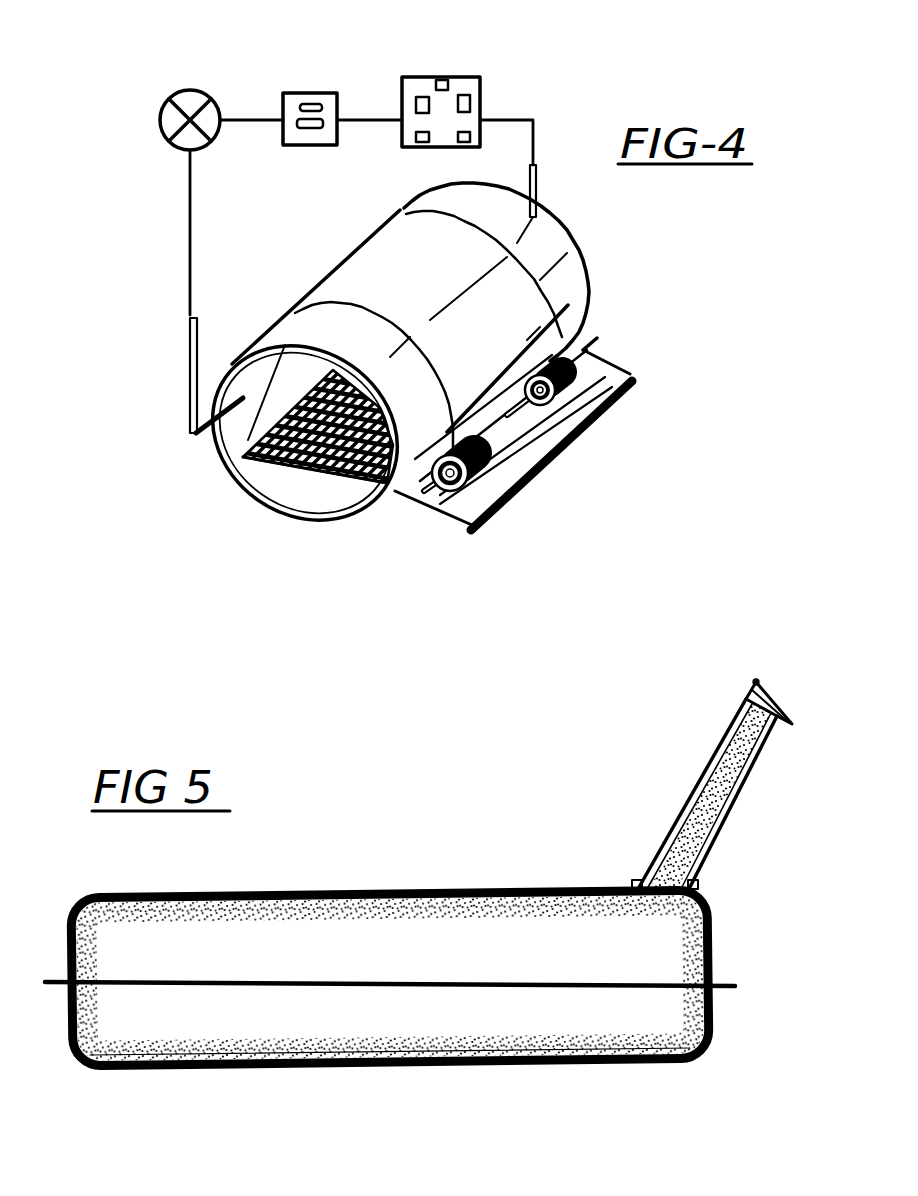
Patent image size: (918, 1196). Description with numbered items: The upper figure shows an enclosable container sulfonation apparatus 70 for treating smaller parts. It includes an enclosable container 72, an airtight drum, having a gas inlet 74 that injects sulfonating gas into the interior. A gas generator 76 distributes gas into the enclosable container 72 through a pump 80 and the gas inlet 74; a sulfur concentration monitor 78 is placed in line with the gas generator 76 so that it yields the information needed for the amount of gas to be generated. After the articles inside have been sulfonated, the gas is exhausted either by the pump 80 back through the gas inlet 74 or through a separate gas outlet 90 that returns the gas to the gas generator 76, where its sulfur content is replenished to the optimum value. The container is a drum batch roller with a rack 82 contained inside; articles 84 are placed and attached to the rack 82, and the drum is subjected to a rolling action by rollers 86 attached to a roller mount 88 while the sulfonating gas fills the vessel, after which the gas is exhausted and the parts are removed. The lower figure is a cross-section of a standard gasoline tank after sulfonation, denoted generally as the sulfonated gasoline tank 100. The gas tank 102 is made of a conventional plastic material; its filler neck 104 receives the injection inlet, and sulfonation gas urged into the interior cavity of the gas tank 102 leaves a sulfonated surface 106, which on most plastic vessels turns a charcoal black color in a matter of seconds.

In FIG. 4, the enclosable container sulfonation apparatus 70 is at (178, 296).
In FIG. 4, the enclosable container 72 is at (557, 255).
In FIG. 4, the gas inlet 74 is at (193, 390).
In FIG. 4, the gas generator 76 is at (466, 77).
In FIG. 4, the sulfur concentration monitor 78 is at (330, 93).
In FIG. 4, the pump 80 is at (192, 98).
In FIG. 4, the rack 82 is at (343, 487).
In FIG. 4, the articles 84 is at (255, 495).
In FIG. 4, the rollers 86 is at (594, 386).
In FIG. 4, the roller mount 88 is at (527, 427).
In FIG. 4, the gas outlet 90 is at (540, 172).
In FIG. 5, the sulfonated gasoline tank 100 is at (459, 858).
In FIG. 5, the gas tank 102 is at (527, 889).
In FIG. 5, the filler neck 104 is at (762, 727).
In FIG. 5, the sulfonated surface 106 is at (620, 1030).